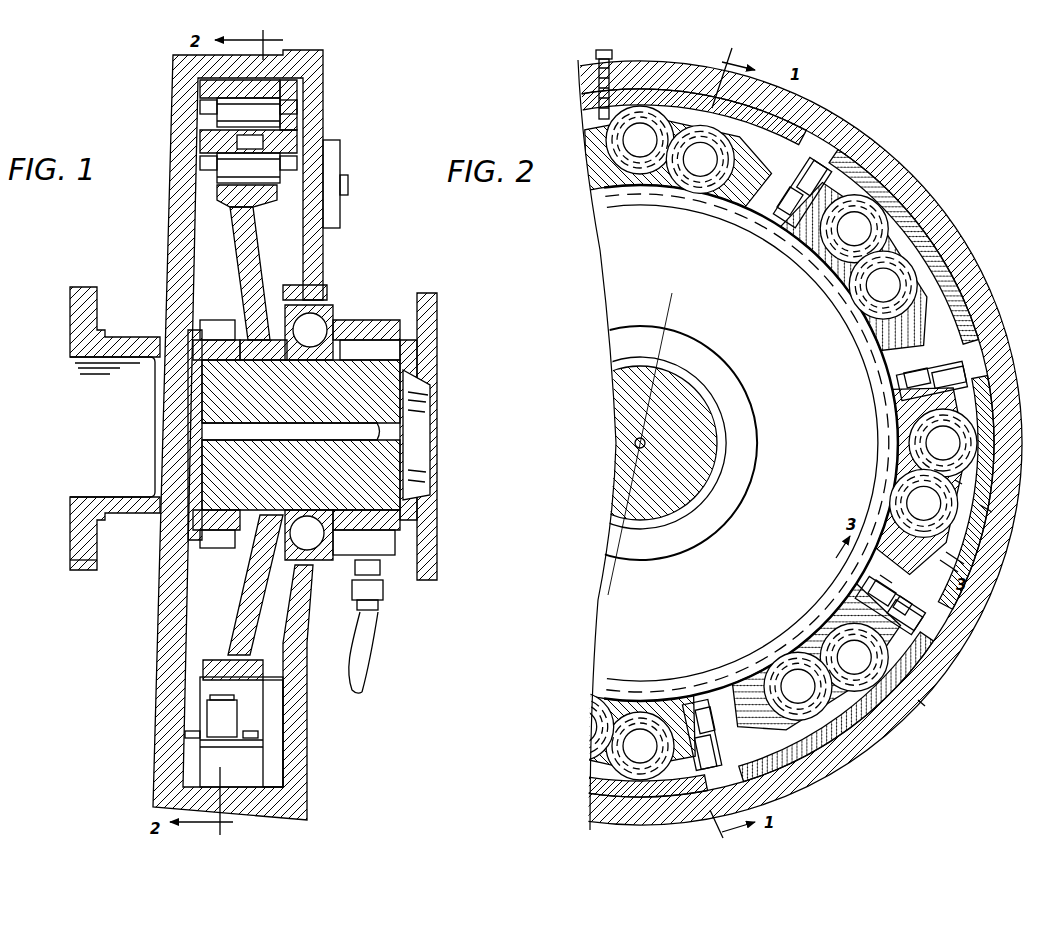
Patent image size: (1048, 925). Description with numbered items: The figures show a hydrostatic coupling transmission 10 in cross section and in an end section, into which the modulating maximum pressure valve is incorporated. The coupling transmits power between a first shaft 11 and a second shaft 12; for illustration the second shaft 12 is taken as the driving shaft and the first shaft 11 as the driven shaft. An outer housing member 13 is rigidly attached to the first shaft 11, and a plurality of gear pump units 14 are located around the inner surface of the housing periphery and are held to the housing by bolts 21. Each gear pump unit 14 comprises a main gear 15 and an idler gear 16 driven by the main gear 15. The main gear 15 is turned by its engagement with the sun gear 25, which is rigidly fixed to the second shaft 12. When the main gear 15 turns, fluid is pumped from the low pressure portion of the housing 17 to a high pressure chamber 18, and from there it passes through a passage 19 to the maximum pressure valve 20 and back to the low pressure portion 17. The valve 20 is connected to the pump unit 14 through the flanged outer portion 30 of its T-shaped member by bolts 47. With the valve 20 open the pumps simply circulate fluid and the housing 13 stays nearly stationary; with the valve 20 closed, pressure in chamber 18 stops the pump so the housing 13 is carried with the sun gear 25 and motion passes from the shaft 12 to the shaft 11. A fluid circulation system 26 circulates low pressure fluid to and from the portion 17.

In FIG. 1, the wheel hub assembly 10 is at (442, 419).
In FIG. 1, the first shaft 11 is at (120, 518).
In FIG. 1, the second shaft 12 is at (437, 561).
In FIG. 2, the second shaft 12 is at (605, 477).
In FIG. 1, the outer housing member 13 is at (157, 777).
In FIG. 2, the outer housing member 13 is at (921, 702).
In FIG. 1, the gear pump unit 14 is at (299, 116).
In FIG. 2, the gear pump unit 14 is at (811, 115).
In FIG. 1, the main gear 15 is at (205, 118).
In FIG. 2, the main gear 15 is at (986, 515).
In FIG. 2, the idler gear 16 is at (996, 432).
In FIG. 1, the low pressure portion of the housing 17 is at (285, 262).
In FIG. 2, the low pressure portion of the housing 17 is at (905, 472).
In FIG. 1, the high pressure chamber 18 is at (198, 92).
In FIG. 2, the high pressure chamber 18 is at (978, 503).
In FIG. 2, the passage 19 is at (951, 565).
In FIG. 1, the maximum pressure valve 20 is at (200, 716).
In FIG. 2, the maximum pressure valve 20 is at (871, 590).
In FIG. 2, the bolt 21 is at (598, 58).
In FIG. 1, the sun gear 25 is at (228, 198).
In FIG. 2, the sun gear 25 is at (606, 265).
In FIG. 1, the fluid circulation system 26 is at (391, 580).
In FIG. 2, the outer portion 30 is at (908, 600).
In FIG. 2, the bolt 47 is at (890, 565).